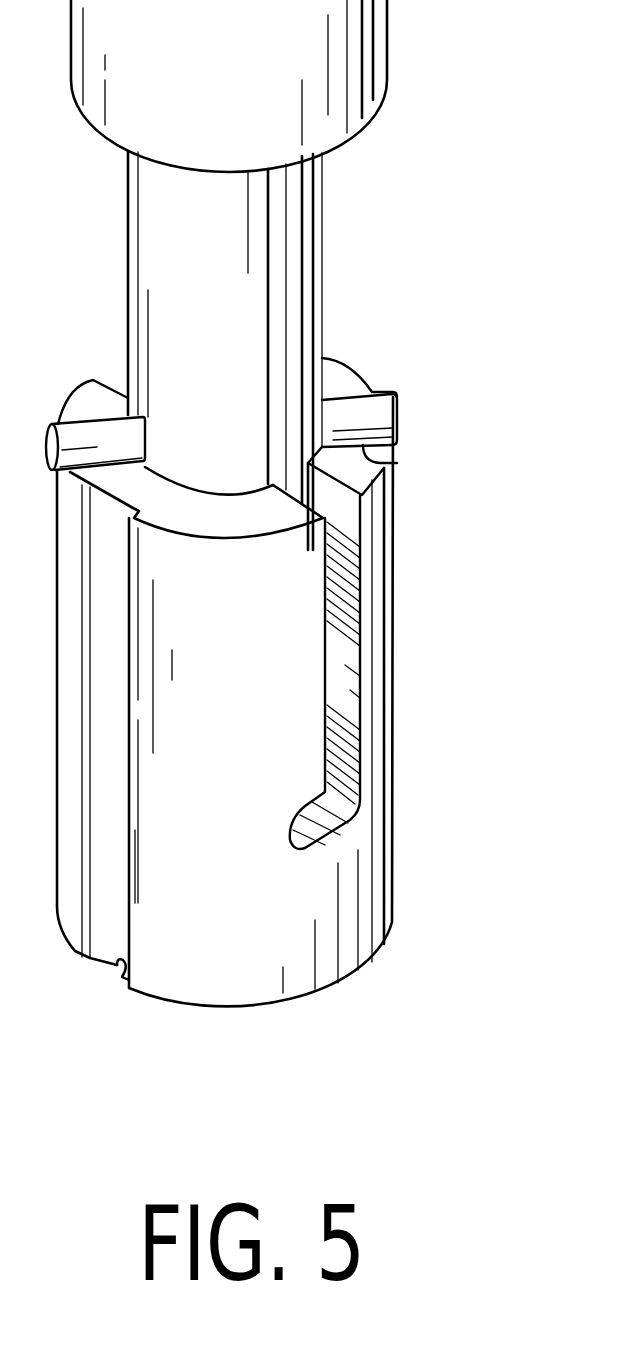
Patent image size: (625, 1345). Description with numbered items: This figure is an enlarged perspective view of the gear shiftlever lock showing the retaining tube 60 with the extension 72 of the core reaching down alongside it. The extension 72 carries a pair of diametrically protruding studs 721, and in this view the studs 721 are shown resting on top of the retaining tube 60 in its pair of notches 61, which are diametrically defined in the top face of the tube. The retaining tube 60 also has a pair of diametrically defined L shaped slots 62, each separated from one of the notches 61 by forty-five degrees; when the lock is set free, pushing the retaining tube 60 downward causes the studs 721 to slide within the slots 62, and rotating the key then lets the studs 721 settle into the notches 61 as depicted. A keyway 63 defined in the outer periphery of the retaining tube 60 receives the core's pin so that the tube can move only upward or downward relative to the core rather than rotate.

The extension 72 is at (317, 182).
The studs 721 is at (390, 408).
The notches 61 is at (397, 466).
The retaining tube 60 is at (393, 797).
The L shaped slots 62 is at (353, 657).
The keyway 63 is at (115, 966).